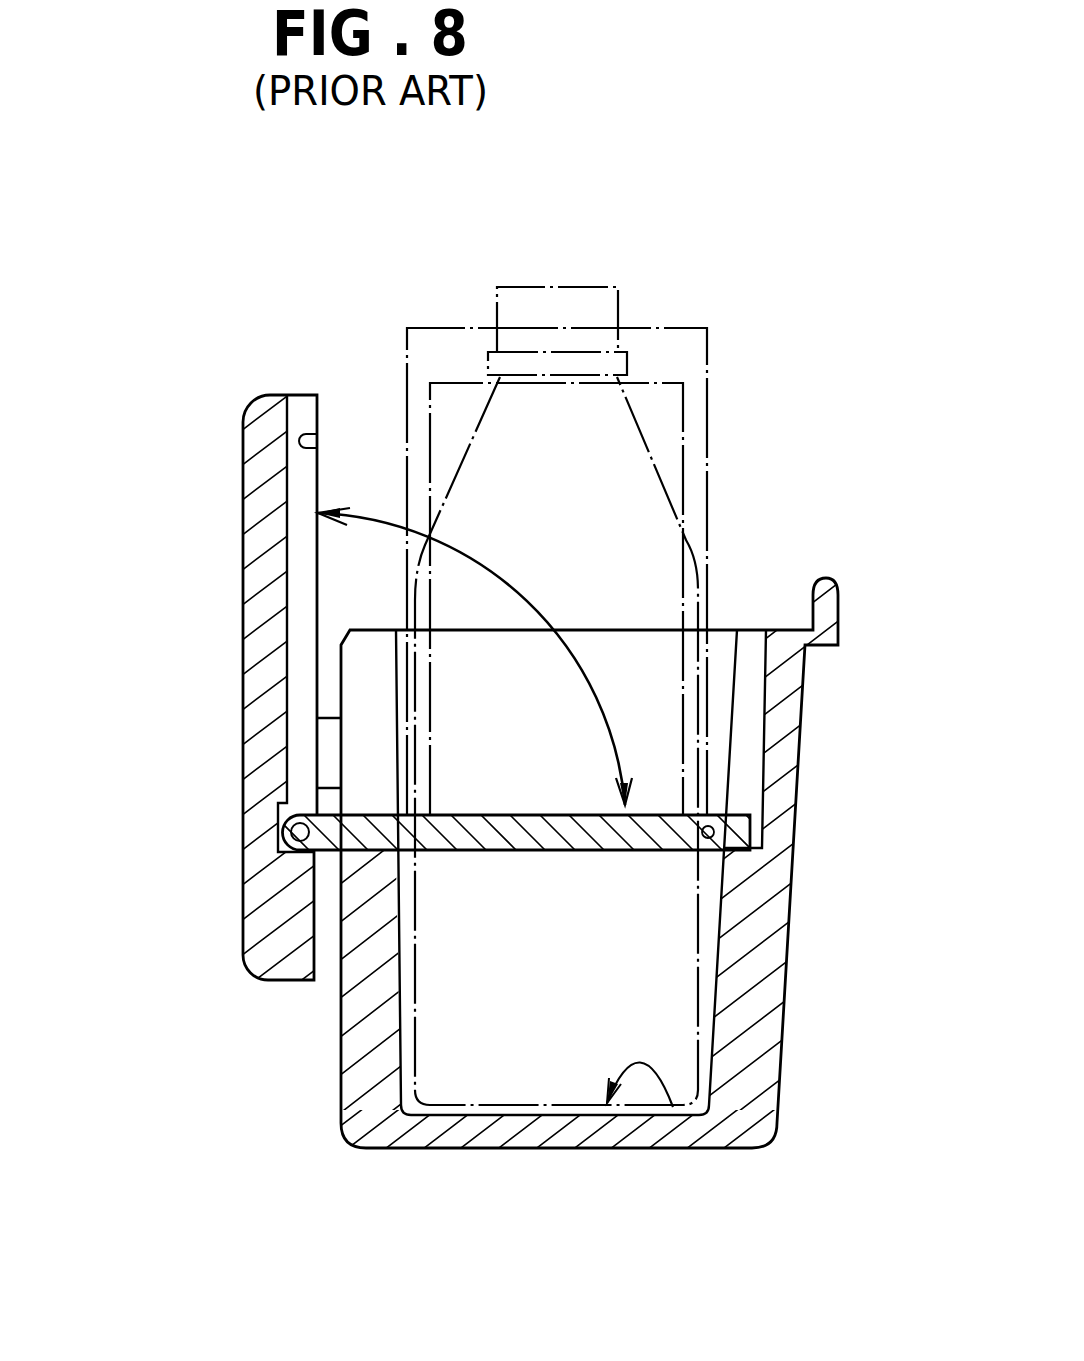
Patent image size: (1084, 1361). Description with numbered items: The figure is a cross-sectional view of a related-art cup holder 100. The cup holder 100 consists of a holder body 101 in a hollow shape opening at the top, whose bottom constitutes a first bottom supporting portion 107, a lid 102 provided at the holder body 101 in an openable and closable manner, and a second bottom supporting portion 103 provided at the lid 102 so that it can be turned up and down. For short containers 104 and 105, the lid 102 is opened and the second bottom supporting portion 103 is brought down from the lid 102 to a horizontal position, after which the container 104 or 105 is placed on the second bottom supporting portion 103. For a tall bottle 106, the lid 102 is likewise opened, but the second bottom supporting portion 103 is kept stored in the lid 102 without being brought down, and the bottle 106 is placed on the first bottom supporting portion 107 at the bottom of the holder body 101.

The cup holder 100 is at (207, 326).
The holder body 101 is at (768, 988).
The lid 102 is at (262, 693).
The second bottom supporting portion 103 is at (492, 850).
The short container 104 is at (683, 408).
The short container 105 is at (709, 467).
The tall bottle 106 is at (603, 287).
The first bottom supporting portion 107 is at (673, 1107).